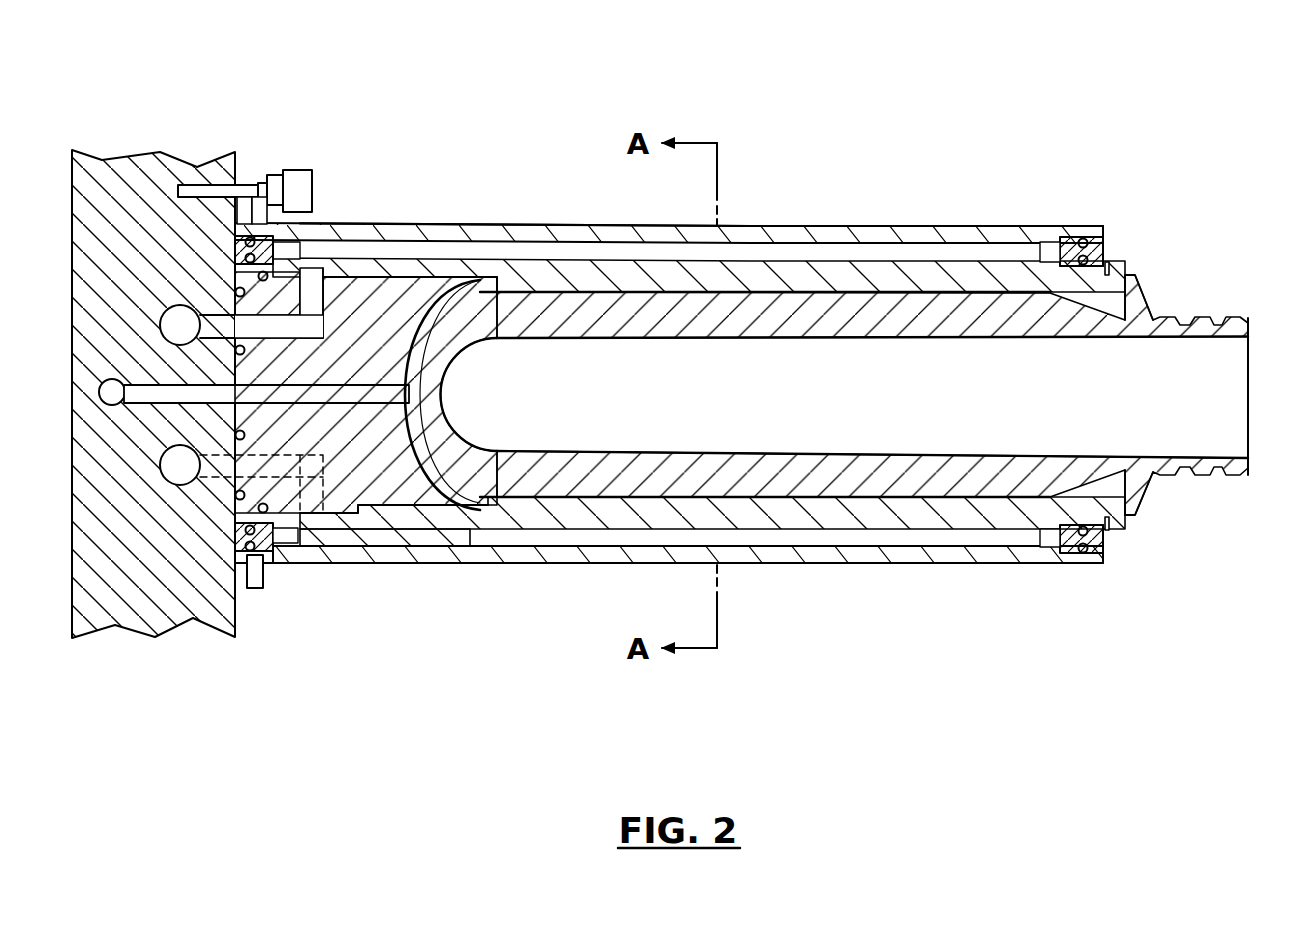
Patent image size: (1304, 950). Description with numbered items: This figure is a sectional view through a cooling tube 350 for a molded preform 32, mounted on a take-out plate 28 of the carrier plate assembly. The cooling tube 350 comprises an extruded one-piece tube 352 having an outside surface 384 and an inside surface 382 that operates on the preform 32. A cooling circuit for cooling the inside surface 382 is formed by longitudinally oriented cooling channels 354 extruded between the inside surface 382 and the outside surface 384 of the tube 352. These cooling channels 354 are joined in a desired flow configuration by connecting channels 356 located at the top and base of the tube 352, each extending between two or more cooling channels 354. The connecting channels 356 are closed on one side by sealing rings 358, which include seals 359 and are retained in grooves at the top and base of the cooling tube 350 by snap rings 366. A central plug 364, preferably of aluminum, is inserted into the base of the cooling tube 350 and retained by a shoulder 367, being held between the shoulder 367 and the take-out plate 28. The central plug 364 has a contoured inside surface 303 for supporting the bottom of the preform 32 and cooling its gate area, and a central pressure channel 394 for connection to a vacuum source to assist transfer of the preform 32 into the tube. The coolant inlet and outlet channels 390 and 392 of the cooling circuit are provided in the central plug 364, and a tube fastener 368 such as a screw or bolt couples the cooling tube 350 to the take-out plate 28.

The take-out plate 28 is at (140, 178).
The preform 32 is at (1133, 500).
The contoured inside surface 303 is at (490, 287).
The cooling tube 350 is at (988, 88).
The tube 352 is at (662, 226).
The cooling channels 354 is at (790, 247).
The connecting channels 356 is at (285, 248).
The sealing rings 358 is at (1110, 257).
The seals 359 is at (1088, 237).
The central plug 364 is at (385, 477).
The snap rings 366 is at (1113, 259).
The shoulder 367 is at (358, 522).
The tube fastener 368 is at (297, 170).
The inside surface 382 is at (910, 290).
The outside surface 384 is at (576, 225).
The inlet channel 390 is at (322, 276).
The outlet channel 392 is at (312, 505).
The pressure channel 394 is at (442, 405).